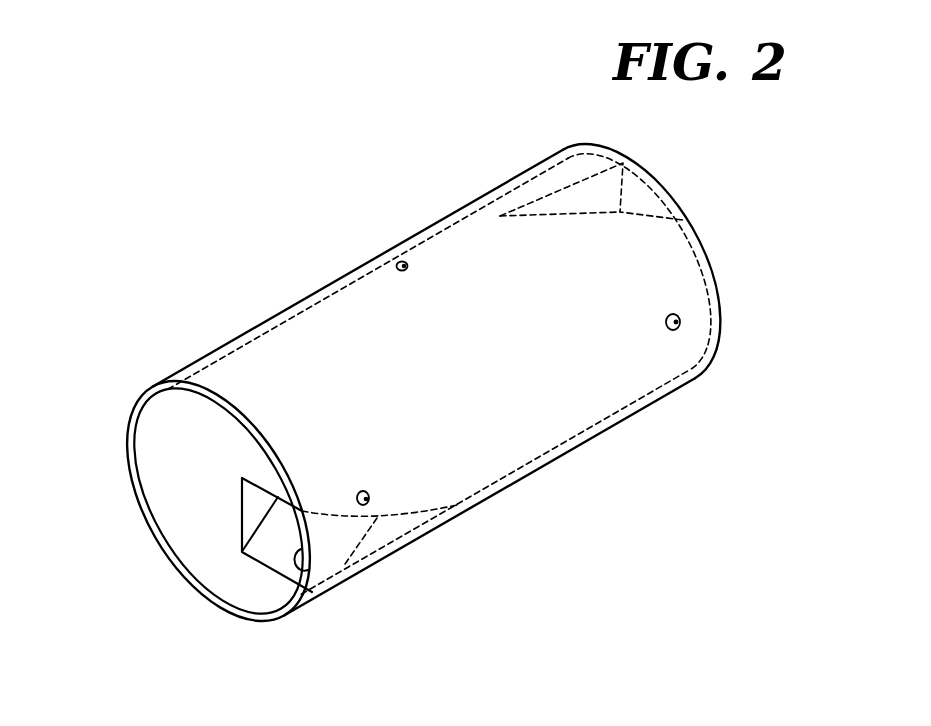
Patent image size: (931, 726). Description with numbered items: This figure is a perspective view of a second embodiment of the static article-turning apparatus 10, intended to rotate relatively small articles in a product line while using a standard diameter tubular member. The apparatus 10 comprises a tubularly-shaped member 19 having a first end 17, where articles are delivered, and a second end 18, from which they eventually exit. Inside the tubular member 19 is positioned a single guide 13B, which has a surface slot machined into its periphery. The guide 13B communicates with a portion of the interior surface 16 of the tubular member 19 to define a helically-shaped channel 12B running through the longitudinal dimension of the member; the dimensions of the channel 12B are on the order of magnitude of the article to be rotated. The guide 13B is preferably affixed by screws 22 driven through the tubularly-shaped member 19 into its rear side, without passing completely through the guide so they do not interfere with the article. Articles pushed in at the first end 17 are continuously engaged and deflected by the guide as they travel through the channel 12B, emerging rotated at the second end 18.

The article-turning apparatus 10 is at (148, 304).
The helically-shaped channel 12B is at (633, 205).
The single guide 13B is at (168, 492).
The interior surface 16 is at (292, 573).
The first end 17 is at (130, 428).
The second end 18 is at (717, 265).
The tubularly-shaped member 19 is at (250, 330).
The screws 22 is at (400, 260).